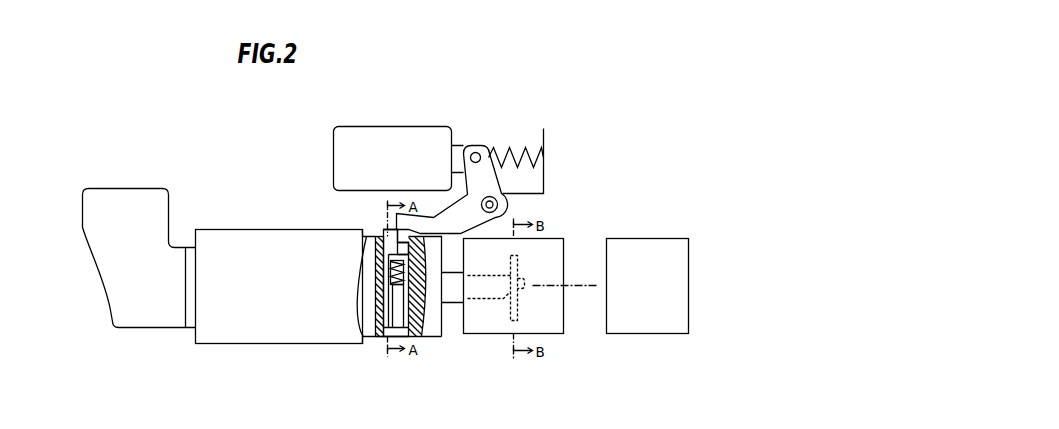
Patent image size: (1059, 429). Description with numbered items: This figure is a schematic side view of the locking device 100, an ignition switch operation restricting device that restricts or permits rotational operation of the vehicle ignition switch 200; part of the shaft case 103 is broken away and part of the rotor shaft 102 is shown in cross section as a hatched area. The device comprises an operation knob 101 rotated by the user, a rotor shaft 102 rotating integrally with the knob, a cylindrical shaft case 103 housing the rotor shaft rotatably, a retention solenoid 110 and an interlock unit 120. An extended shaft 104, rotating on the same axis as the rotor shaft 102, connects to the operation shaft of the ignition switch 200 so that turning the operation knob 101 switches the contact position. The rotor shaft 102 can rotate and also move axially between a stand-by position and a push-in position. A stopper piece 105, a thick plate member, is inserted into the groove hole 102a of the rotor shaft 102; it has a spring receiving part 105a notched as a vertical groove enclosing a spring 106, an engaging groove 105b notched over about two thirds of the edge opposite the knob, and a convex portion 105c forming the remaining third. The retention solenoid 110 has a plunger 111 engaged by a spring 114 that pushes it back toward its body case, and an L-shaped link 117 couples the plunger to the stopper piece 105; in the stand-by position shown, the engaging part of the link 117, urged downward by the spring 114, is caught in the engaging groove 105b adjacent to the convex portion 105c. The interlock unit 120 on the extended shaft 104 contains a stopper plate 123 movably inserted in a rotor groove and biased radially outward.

The locking device 100 is at (555, 60).
The operation knob 101 is at (153, 186).
The rotor shaft 102 is at (370, 255).
The groove hole 102a is at (385, 236).
The shaft case 103 is at (305, 228).
The extended shaft 104 is at (477, 300).
The stopper piece 105 is at (380, 306).
The spring receiving part 105a is at (390, 262).
The engaging groove 105b is at (405, 232).
The convex portion 105c is at (385, 226).
The spring 106 is at (403, 287).
The retention solenoid 110 is at (423, 125).
The plunger 111 is at (470, 145).
The spring 114 is at (533, 152).
The link 117 is at (498, 183).
The interlock unit 120 is at (563, 248).
The stopper plate 123 is at (518, 295).
The ignition switch 200 is at (615, 335).